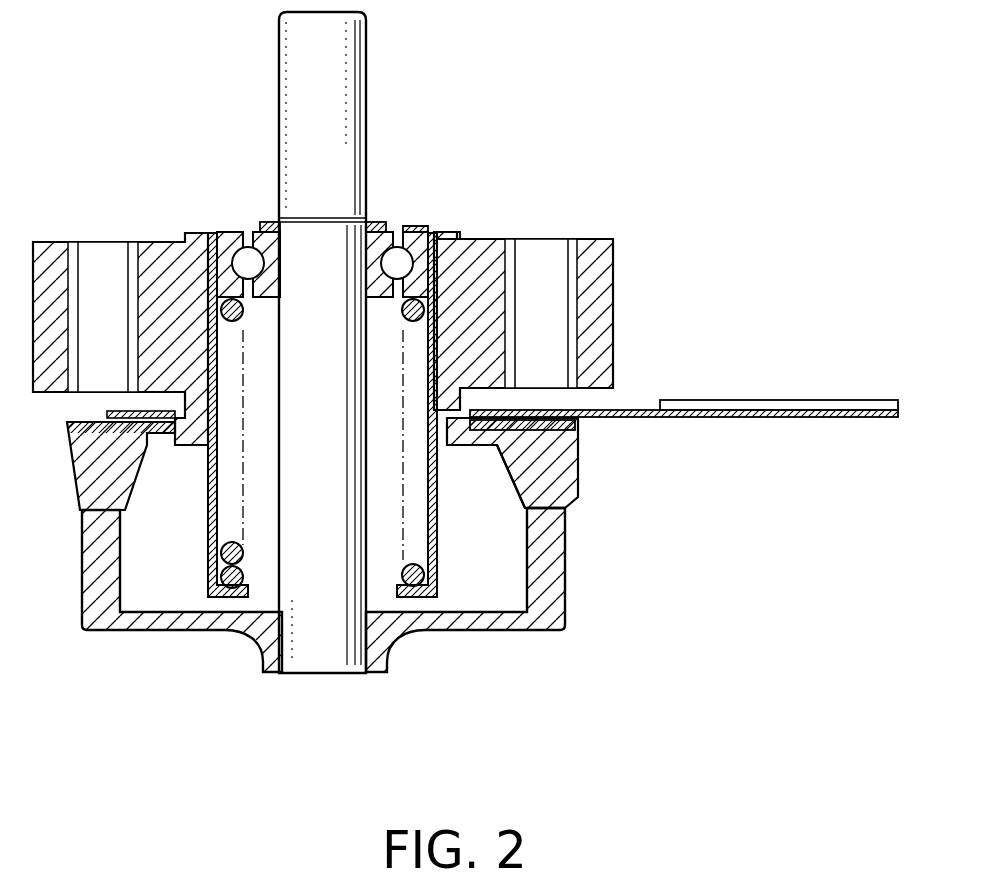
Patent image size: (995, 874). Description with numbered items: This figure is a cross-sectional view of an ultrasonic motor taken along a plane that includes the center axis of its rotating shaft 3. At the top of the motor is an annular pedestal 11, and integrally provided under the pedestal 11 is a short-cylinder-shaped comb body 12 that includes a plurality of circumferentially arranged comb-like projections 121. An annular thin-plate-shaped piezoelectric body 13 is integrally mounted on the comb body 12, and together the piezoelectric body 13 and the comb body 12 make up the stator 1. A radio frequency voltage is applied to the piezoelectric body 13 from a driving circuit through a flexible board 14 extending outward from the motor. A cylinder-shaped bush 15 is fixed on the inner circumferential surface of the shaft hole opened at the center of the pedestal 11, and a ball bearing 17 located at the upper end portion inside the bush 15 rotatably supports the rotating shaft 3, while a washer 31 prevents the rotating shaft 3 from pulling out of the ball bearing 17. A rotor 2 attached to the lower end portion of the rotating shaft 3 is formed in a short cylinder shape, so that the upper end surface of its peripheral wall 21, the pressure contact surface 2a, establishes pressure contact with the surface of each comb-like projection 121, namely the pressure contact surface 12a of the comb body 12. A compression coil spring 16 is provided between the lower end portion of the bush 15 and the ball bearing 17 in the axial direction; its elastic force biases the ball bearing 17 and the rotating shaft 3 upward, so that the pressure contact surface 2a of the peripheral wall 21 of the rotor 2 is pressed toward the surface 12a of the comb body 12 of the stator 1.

The stator 1 is at (365, 338).
The rotor 2 is at (354, 590).
The pressure contact surface 2a is at (528, 497).
The rotating shaft 3 is at (355, 33).
The annular pedestal 11 is at (596, 260).
The comb body 12 is at (86, 480).
The pressure contact surface 12a is at (548, 530).
The piezoelectric body 13 is at (577, 427).
The flexible board 14 is at (644, 409).
The bush 15 is at (450, 232).
The compression coil spring 16 is at (406, 567).
The ball bearing 17 is at (418, 232).
The peripheral wall 21 is at (552, 572).
The washer 31 is at (272, 223).
The comb-like projections 121 is at (566, 468).